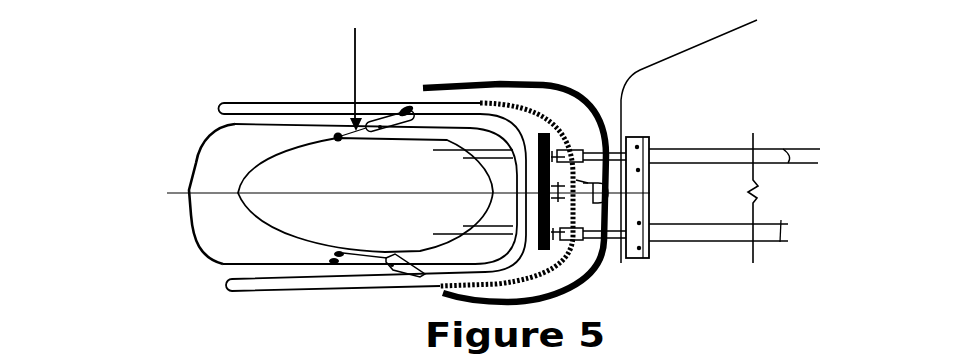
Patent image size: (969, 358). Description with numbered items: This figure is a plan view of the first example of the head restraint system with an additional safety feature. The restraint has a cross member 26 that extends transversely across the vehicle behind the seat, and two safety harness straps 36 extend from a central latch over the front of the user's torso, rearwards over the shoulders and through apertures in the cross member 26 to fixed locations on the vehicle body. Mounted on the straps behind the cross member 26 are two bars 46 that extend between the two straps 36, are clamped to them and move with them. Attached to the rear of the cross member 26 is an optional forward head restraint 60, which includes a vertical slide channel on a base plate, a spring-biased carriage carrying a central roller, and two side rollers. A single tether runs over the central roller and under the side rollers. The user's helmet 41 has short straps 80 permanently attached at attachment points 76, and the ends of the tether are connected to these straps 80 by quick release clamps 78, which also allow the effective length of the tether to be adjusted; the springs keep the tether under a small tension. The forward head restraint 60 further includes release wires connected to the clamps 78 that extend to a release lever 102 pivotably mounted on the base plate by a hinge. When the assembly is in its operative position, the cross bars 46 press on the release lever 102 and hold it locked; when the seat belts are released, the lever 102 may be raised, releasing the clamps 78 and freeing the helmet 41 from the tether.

The cross member 26 is at (532, 97).
The straps 36 is at (773, 152).
The helmet 41 is at (270, 208).
The bars 46 is at (645, 138).
The forward head restraint 60 is at (657, 83).
The attachment points 76 is at (337, 137).
The quick release clamps 78 is at (410, 108).
The short straps 80 is at (362, 67).
The release lever 102 is at (725, 133).